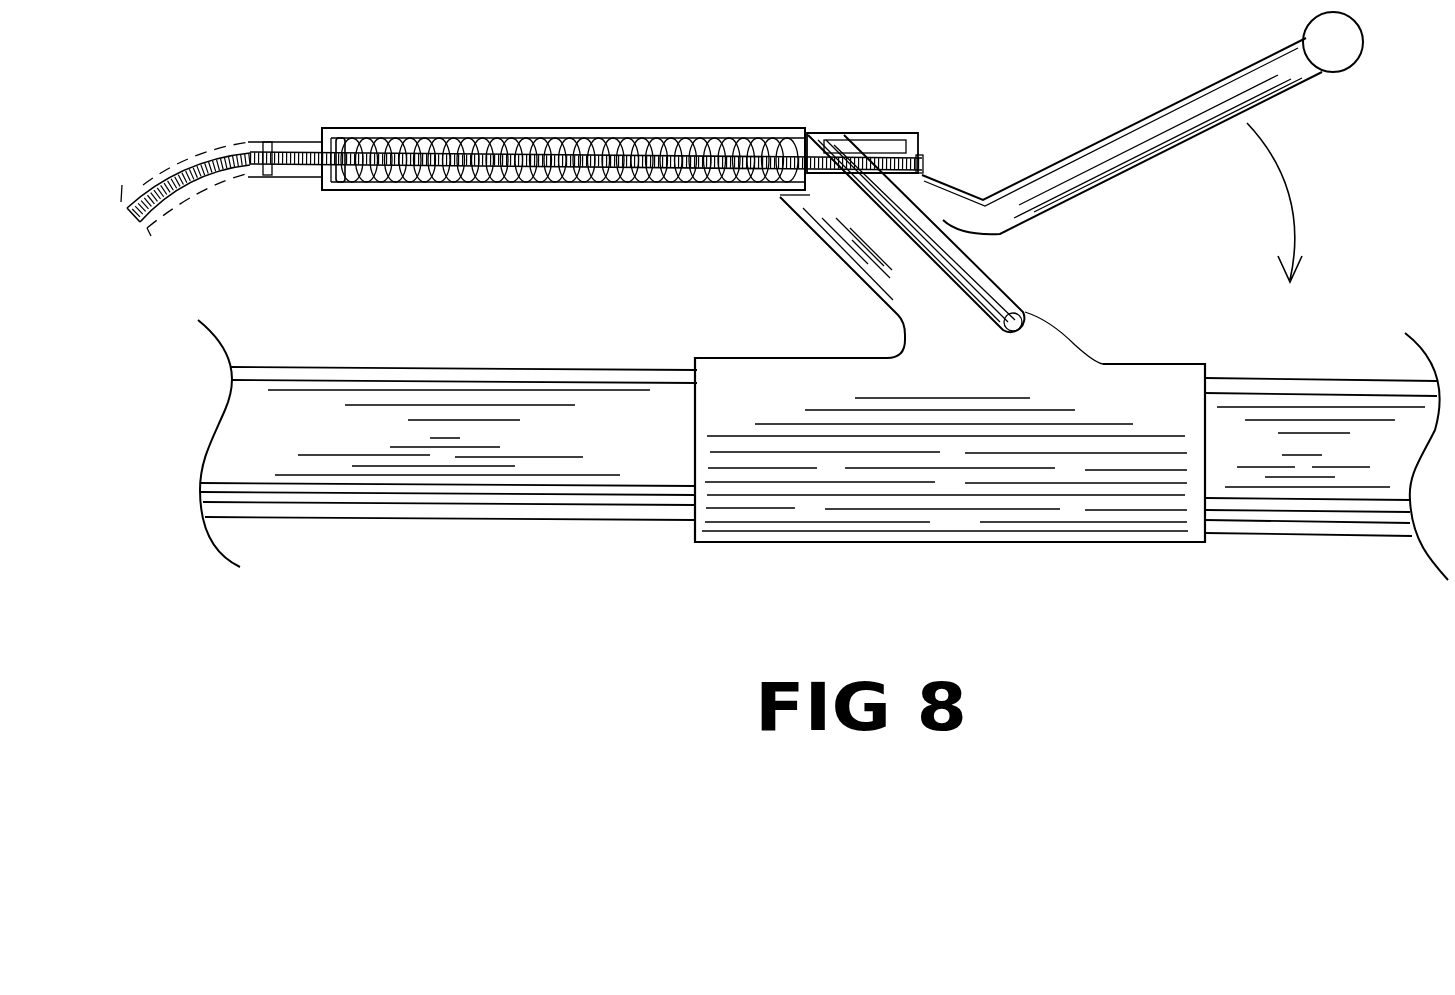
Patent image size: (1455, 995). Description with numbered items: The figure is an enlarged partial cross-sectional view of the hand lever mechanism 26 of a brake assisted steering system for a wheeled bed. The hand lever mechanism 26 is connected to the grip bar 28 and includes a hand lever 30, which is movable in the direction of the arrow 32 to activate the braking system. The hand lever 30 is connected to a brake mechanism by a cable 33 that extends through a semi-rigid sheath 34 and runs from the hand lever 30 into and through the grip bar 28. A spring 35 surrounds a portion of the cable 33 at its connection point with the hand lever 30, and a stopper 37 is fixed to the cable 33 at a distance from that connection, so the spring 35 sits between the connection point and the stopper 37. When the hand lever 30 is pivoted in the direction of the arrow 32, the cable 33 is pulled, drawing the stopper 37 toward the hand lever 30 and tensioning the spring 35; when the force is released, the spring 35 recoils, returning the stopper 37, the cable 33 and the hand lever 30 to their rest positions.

The hand lever mechanism 26 is at (432, 579).
The grip bar 28 is at (1290, 517).
The hand lever 30 is at (1090, 147).
The arrow 32 is at (1283, 197).
The cable 33 is at (228, 156).
The semi-rigid sheath 34 is at (160, 172).
The spring 35 is at (423, 146).
The stopper 37 is at (340, 138).